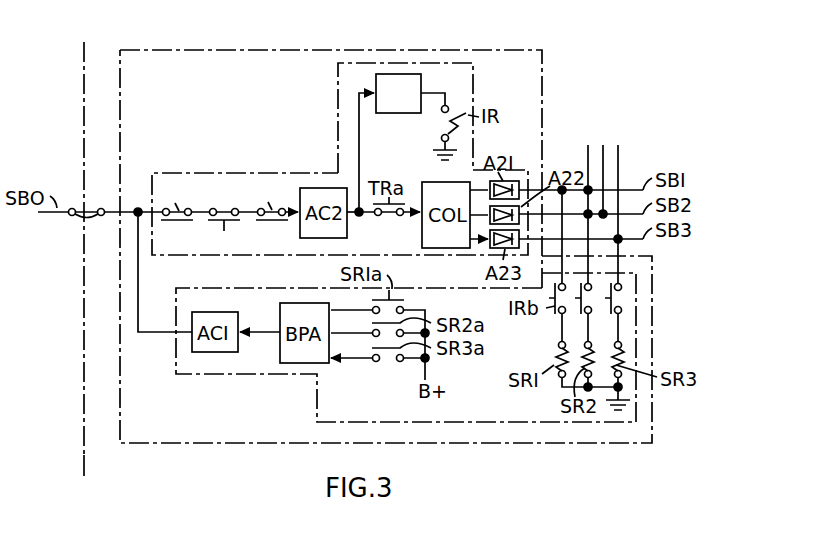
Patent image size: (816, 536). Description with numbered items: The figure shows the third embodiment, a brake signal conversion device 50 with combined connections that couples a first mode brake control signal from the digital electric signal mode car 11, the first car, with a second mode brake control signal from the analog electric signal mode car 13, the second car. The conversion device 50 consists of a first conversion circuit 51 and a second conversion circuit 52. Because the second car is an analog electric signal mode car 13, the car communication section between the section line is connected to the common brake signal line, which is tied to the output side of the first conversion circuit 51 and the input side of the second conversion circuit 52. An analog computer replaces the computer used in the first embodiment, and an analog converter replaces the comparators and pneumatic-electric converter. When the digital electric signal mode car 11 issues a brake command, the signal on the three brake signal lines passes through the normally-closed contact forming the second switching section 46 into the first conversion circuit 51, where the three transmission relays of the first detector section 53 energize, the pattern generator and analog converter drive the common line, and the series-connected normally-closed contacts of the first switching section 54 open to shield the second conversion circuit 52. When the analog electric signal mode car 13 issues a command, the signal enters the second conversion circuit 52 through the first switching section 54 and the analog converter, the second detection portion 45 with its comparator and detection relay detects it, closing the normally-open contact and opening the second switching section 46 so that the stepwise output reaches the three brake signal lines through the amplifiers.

The digital electric signal mode car 11 is at (88, 461).
The analog electric signal mode car 13 is at (80, 469).
The second detection portion 45 is at (437, 86).
The second switching section 46 is at (624, 300).
The brake signal conversion device 50 is at (304, 45).
The first conversion circuit 51 is at (513, 428).
The second conversion circuit 52 is at (333, 92).
The first detector section 53 is at (624, 355).
The first switching section 54 is at (221, 205).